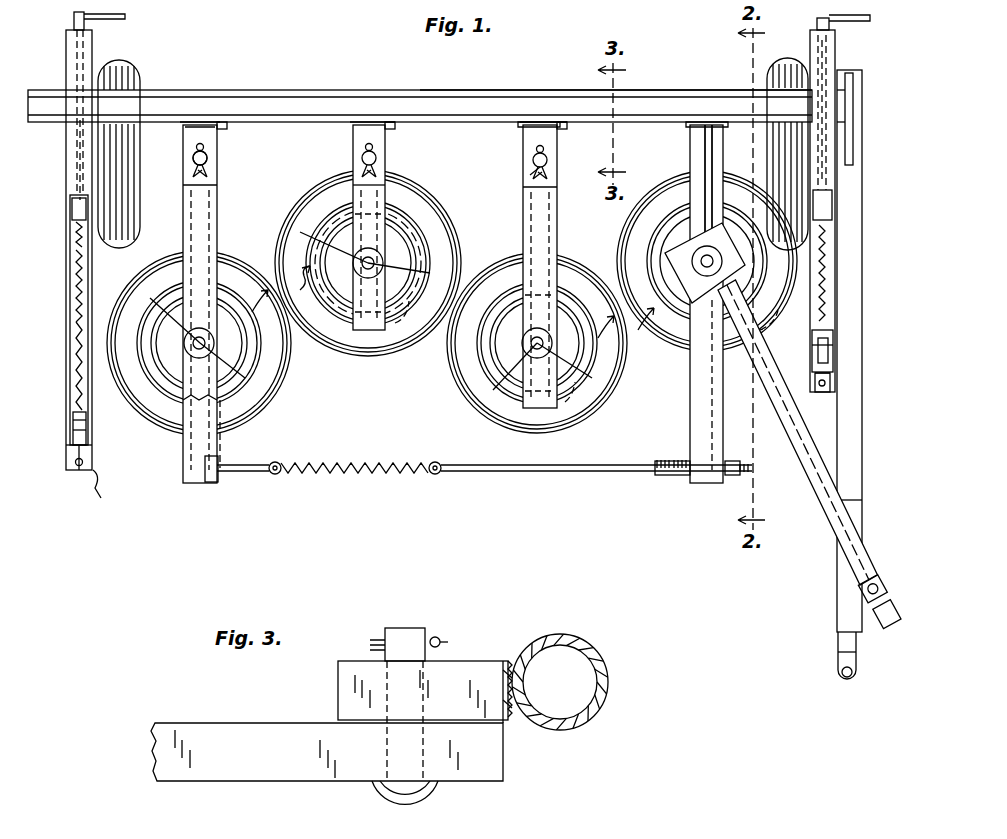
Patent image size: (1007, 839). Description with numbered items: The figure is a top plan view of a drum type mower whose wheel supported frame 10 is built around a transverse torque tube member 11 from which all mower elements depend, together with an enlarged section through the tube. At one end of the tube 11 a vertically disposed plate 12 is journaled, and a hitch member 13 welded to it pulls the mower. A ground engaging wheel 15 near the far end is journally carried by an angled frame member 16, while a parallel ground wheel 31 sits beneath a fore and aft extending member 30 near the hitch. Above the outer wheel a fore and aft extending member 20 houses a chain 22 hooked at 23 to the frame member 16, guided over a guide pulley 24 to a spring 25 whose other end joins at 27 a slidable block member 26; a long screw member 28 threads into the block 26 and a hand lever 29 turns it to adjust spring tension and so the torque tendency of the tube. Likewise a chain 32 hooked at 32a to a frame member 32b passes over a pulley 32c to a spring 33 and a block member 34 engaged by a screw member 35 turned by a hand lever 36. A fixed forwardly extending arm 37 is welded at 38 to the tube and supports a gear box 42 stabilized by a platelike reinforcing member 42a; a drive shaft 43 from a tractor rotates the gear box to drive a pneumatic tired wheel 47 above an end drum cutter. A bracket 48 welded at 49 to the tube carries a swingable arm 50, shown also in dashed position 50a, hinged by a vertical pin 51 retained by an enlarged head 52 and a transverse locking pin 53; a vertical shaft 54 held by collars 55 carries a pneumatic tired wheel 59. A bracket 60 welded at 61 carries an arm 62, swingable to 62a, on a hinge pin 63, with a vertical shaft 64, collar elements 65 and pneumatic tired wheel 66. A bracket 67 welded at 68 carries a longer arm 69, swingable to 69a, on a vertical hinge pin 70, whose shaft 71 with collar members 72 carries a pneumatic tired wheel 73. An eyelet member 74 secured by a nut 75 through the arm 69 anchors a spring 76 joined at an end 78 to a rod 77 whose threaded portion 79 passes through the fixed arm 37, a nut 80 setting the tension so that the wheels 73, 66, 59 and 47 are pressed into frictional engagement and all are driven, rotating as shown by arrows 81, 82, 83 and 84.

In FIG. 1, the wheel supported frame 10 is at (510, 88).
In FIG. 1, the tube member 11 is at (670, 90).
In FIG. 3, the tube member 11 is at (606, 688).
In FIG. 1, the plate 12 is at (850, 113).
In FIG. 1, the hitch member 13 is at (857, 474).
In FIG. 1, the ground engaging and supporting wheel 15 is at (138, 70).
In FIG. 1, the frame member 16 is at (109, 487).
In FIG. 1, the fore and aft extending member 20 is at (60, 353).
In FIG. 1, the chain 22 is at (70, 392).
In FIG. 1, the hook point 23 is at (76, 466).
In FIG. 1, the guide pulley 24 is at (70, 432).
In FIG. 1, the spring 25 is at (70, 285).
In FIG. 1, the block member 26 is at (70, 208).
In FIG. 1, the spring connection 27 is at (70, 228).
In FIG. 1, the screw member 28 is at (72, 153).
In FIG. 1, the hand lever 29 is at (72, 14).
In FIG. 1, the fore and aft extending member 30 is at (841, 293).
In FIG. 1, the ground wheel 31 is at (787, 62).
In FIG. 1, the chain 32 is at (835, 332).
In FIG. 1, the hook point 32a is at (820, 392).
In FIG. 1, the frame member 32b is at (832, 385).
In FIG. 1, the pulley 32c is at (833, 360).
In FIG. 1, the spring 33 is at (835, 268).
In FIG. 1, the block member 34 is at (832, 205).
In FIG. 1, the screw member 35 is at (835, 58).
In FIG. 1, the hand lever 36 is at (862, 20).
In FIG. 1, the fixed forwardly extending arm 37 is at (690, 425).
In FIG. 1, the weld 38 is at (688, 128).
In FIG. 1, the gear box 42 is at (715, 224).
In FIG. 1, the platelike reinforcing member 42a is at (712, 150).
In FIG. 1, the drive shaft 43 is at (830, 490).
In FIG. 1, the pneumatic tired wheel 47 is at (775, 318).
In FIG. 1, the bracket 48 is at (556, 140).
In FIG. 3, the bracket 48 is at (338, 688).
In FIG. 1, the weld 49 is at (514, 130).
In FIG. 3, the weld 49 is at (515, 728).
In FIG. 1, the forwardly projecting arm 50 is at (532, 220).
In FIG. 3, the forwardly projecting arm 50 is at (237, 780).
In FIG. 1, the dashed line position 50a is at (585, 418).
In FIG. 1, the vertical pin 51 is at (547, 162).
In FIG. 3, the vertical pin 51 is at (413, 628).
In FIG. 3, the enlarged head 52 is at (377, 786).
In FIG. 1, the transverse locking pin 53 is at (530, 170).
In FIG. 3, the transverse locking pin 53 is at (440, 640).
In FIG. 1, the vertical shaft 54 is at (566, 353).
In FIG. 1, the collars 55 is at (506, 370).
In FIG. 1, the pneumatic tired wheel 59 is at (499, 425).
In FIG. 1, the bracket 60 is at (335, 120).
In FIG. 1, the weld 61 is at (397, 122).
In FIG. 1, the arm 62 is at (330, 180).
In FIG. 1, the dashed line position 62a is at (418, 345).
In FIG. 1, the hinge pin 63 is at (384, 164).
In FIG. 1, the vertical shaft 64 is at (406, 265).
In FIG. 1, the collar elements 65 is at (335, 240).
In FIG. 1, the pneumatic tired wheel 66 is at (372, 356).
In FIG. 1, the bracket 67 is at (214, 163).
In FIG. 1, the weld 68 is at (227, 125).
In FIG. 1, the forwardly extending arm 69 is at (183, 212).
In FIG. 1, the dashed line position 69a is at (222, 437).
In FIG. 1, the vertical hinge pin 70 is at (193, 158).
In FIG. 1, the shaft 71 is at (235, 361).
In FIG. 1, the collar members 72 is at (166, 320).
In FIG. 1, the pneumatic tired wheel 73 is at (164, 428).
In FIG. 1, the eyelet member 74 is at (250, 473).
In FIG. 1, the nut 75 is at (207, 478).
In FIG. 1, the spring 76 is at (363, 474).
In FIG. 1, the rod 77 is at (578, 474).
In FIG. 1, the rod end 78 is at (435, 474).
In FIG. 1, the threaded portion 79 is at (657, 475).
In FIG. 1, the nut 80 is at (724, 479).
In FIG. 1, the arrow 81 is at (707, 267).
In FIG. 1, the arrow 82 is at (605, 330).
In FIG. 1, the arrow 83 is at (318, 297).
In FIG. 1, the arrow 84 is at (265, 309).